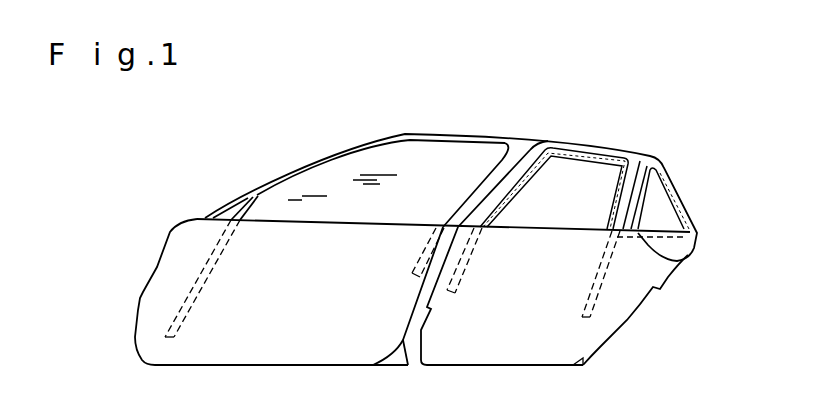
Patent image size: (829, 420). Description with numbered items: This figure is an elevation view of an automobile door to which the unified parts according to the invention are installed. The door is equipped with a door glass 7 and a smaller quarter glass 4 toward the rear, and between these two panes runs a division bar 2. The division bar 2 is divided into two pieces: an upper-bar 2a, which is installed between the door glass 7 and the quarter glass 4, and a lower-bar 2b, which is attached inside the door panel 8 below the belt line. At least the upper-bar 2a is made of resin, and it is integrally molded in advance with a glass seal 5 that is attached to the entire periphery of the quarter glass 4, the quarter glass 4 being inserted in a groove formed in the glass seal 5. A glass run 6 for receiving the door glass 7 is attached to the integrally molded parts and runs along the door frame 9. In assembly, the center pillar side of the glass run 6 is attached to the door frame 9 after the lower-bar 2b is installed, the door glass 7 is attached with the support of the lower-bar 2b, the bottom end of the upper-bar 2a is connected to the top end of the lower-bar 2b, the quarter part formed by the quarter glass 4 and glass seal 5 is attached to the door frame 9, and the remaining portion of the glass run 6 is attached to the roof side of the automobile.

The division bar 2 is at (580, 241).
The upper-bar 2a is at (652, 157).
The lower-bar 2b is at (594, 314).
The quarter glass 4 is at (640, 235).
The glass seal 5 is at (660, 184).
The glass run 6 is at (540, 147).
The door glass 7 is at (387, 156).
The door panel 8 is at (518, 352).
The door frame 9 is at (549, 145).